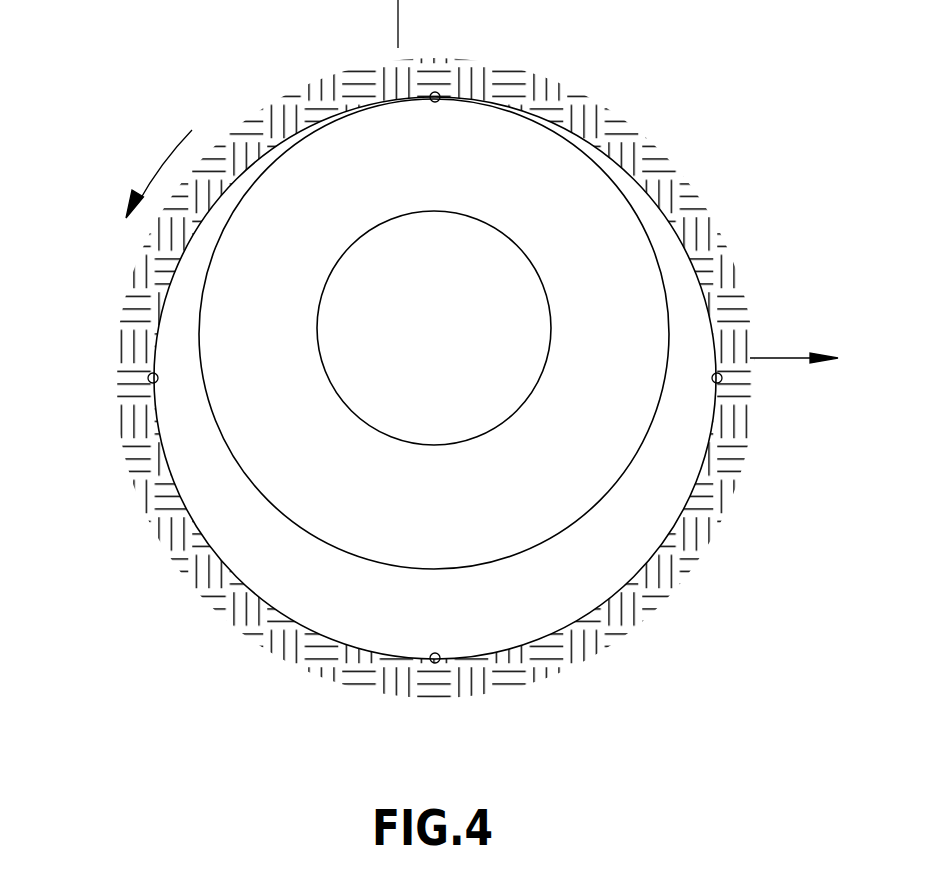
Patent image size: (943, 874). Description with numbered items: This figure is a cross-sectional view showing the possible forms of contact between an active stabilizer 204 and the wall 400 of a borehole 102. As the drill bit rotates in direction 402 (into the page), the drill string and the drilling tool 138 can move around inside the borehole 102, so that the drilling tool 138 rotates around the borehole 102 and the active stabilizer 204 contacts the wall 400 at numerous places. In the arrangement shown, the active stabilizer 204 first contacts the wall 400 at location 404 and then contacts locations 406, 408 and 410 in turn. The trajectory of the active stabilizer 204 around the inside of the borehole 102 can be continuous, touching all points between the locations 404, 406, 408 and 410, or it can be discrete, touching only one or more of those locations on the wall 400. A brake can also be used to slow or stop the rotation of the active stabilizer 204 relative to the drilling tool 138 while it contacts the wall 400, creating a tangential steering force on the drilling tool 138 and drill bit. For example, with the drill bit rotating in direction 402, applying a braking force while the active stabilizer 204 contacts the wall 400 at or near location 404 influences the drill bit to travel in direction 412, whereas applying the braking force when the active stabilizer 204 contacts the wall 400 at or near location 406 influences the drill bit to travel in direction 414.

The borehole 102 is at (582, 590).
The drilling tool 138 is at (453, 343).
The active stabilizer 204 is at (258, 490).
The wall 400 is at (693, 259).
The direction 402 is at (160, 160).
The location 404 is at (437, 92).
The location 406 is at (148, 378).
The location 408 is at (435, 663).
The location 410 is at (723, 379).
The direction 412 is at (780, 355).
The direction 414 is at (398, 8).